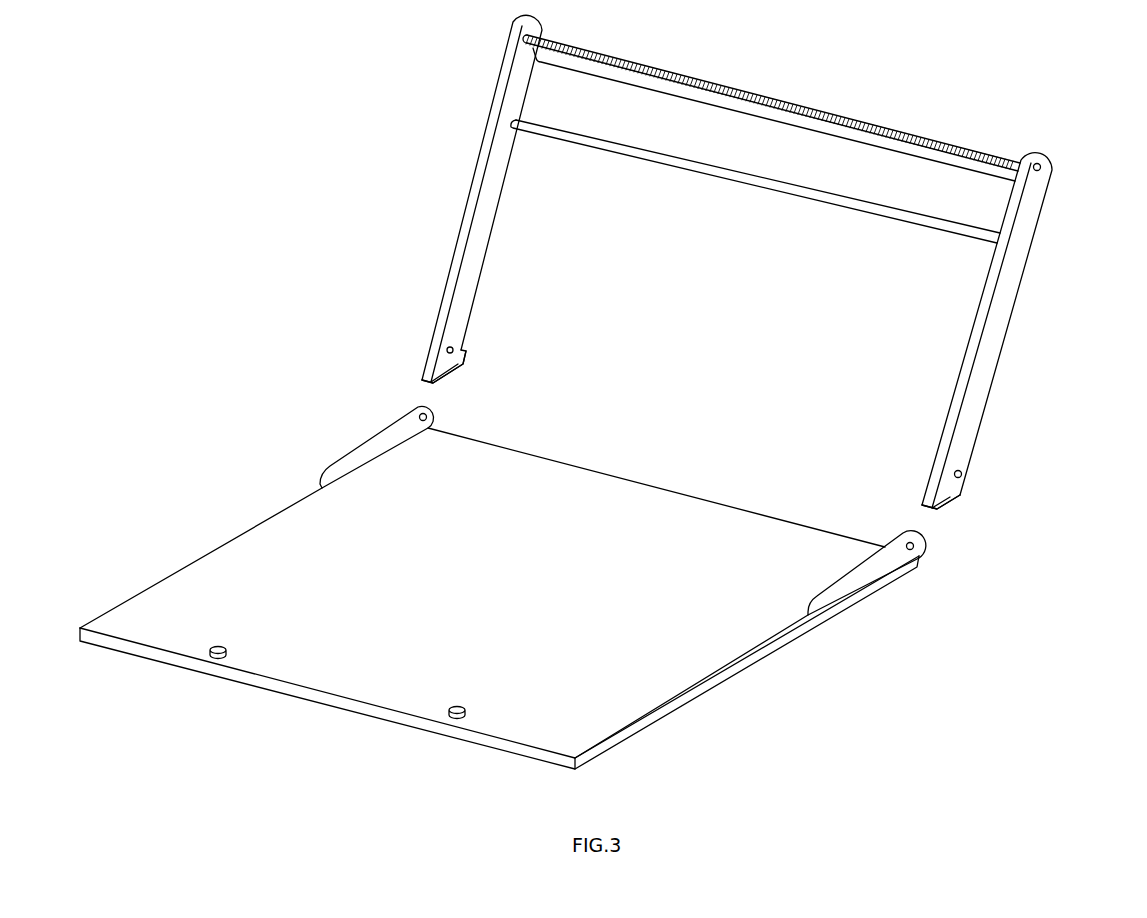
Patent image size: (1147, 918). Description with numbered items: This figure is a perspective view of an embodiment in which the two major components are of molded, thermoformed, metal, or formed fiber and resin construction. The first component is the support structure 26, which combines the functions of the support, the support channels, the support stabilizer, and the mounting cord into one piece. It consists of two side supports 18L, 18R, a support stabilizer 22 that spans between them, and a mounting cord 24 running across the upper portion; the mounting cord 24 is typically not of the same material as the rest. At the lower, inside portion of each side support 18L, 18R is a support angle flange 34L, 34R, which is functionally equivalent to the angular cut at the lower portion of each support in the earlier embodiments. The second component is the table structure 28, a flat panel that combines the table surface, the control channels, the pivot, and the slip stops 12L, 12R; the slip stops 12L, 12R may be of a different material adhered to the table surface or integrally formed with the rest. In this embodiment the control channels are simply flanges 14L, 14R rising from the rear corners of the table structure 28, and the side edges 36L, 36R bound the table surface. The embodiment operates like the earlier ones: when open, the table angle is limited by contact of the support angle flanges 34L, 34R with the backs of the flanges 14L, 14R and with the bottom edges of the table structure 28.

The support structure 26 is at (437, 272).
The side support 18L is at (485, 148).
The side support 18R is at (1005, 297).
The mounting cord 24 is at (870, 120).
The support stabilizer 22 is at (768, 163).
The support angle flange 34L is at (464, 371).
The support angle flange 34R is at (925, 497).
The table structure 28 is at (762, 672).
The left side edge of base plate 36L is at (278, 510).
The right side edge of base plate 36R is at (793, 633).
The flange 14L is at (378, 433).
The flange 14R is at (875, 567).
The slip stop 12L is at (215, 655).
The slip stop 12R is at (452, 718).